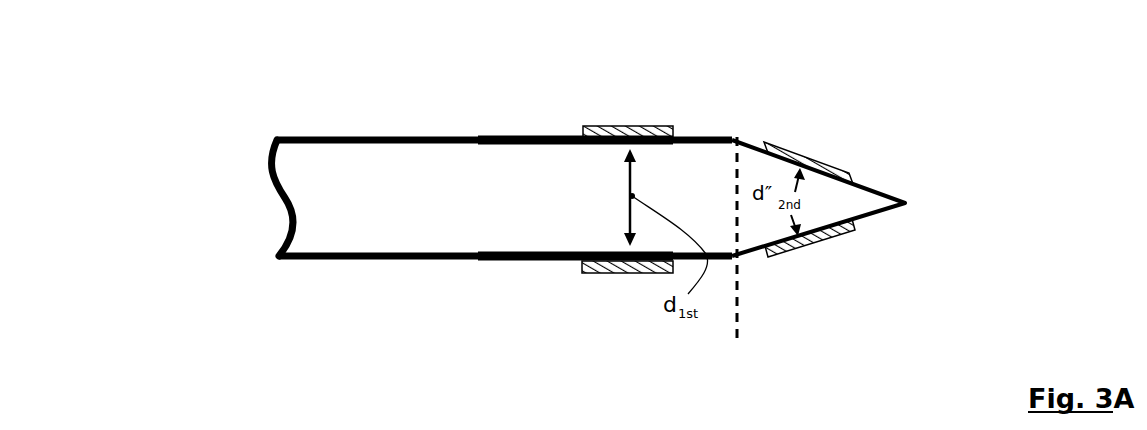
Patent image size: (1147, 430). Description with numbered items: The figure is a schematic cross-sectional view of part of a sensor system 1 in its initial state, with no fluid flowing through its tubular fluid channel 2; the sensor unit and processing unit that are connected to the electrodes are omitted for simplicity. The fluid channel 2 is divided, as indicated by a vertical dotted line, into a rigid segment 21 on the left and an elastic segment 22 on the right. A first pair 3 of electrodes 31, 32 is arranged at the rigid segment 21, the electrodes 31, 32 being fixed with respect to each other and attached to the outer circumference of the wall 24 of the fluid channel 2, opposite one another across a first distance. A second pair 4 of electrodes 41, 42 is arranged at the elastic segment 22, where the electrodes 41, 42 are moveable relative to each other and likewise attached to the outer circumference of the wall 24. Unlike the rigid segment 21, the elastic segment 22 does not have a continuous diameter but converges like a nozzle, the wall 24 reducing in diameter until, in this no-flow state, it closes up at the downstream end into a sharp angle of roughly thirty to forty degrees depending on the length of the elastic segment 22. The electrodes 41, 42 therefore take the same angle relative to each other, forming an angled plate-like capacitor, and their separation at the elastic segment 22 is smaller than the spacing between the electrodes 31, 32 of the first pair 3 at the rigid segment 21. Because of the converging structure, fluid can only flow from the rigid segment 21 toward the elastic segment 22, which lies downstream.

The sensor system 1 is at (222, 105).
The fluid channel 2 is at (301, 229).
The rigid segment 21 is at (450, 257).
The elastic segment 22 is at (753, 257).
The wall 24 is at (341, 138).
The first pair of electrodes 3 is at (595, 158).
The electrode 31 is at (584, 252).
The electrode 32 is at (583, 127).
The second pair of electrodes 4 is at (890, 199).
The electrode 41 is at (857, 175).
The electrode 42 is at (850, 232).